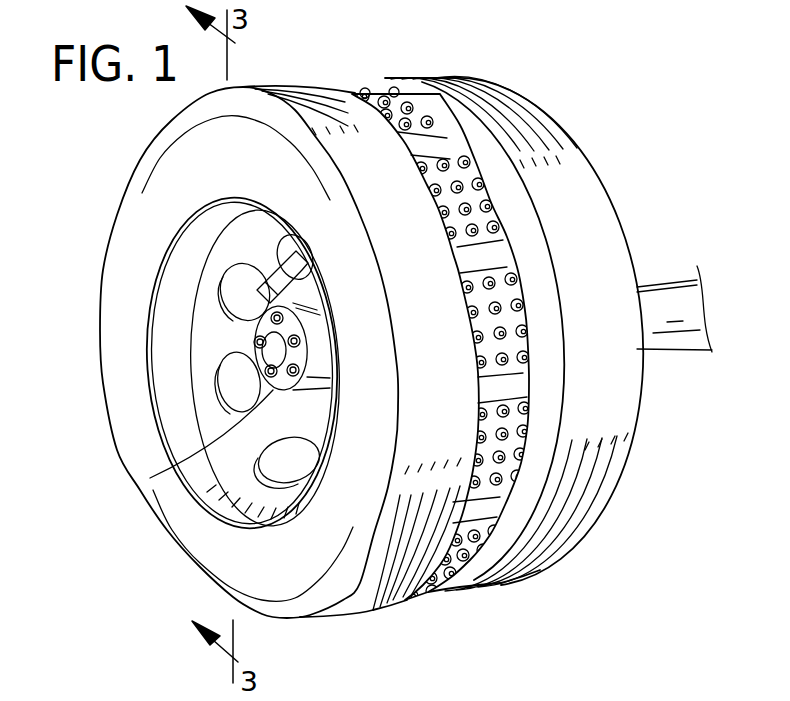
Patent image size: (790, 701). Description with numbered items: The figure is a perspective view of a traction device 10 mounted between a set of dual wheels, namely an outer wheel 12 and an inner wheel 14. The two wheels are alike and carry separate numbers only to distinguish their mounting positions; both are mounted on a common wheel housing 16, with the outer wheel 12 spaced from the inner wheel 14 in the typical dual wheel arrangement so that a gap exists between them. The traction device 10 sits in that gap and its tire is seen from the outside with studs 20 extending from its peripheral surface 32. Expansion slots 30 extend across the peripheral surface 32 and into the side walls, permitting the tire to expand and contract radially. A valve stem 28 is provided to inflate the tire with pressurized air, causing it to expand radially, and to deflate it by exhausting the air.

The traction device 10 is at (452, 346).
The outer wheel 12 is at (125, 243).
The inner wheel 14 is at (590, 207).
The wheel housing 16 is at (150, 478).
The studs 20 is at (394, 89).
The valve stem 28 is at (258, 252).
The expansion slots 30 is at (443, 145).
The peripheral surface 32 is at (477, 200).